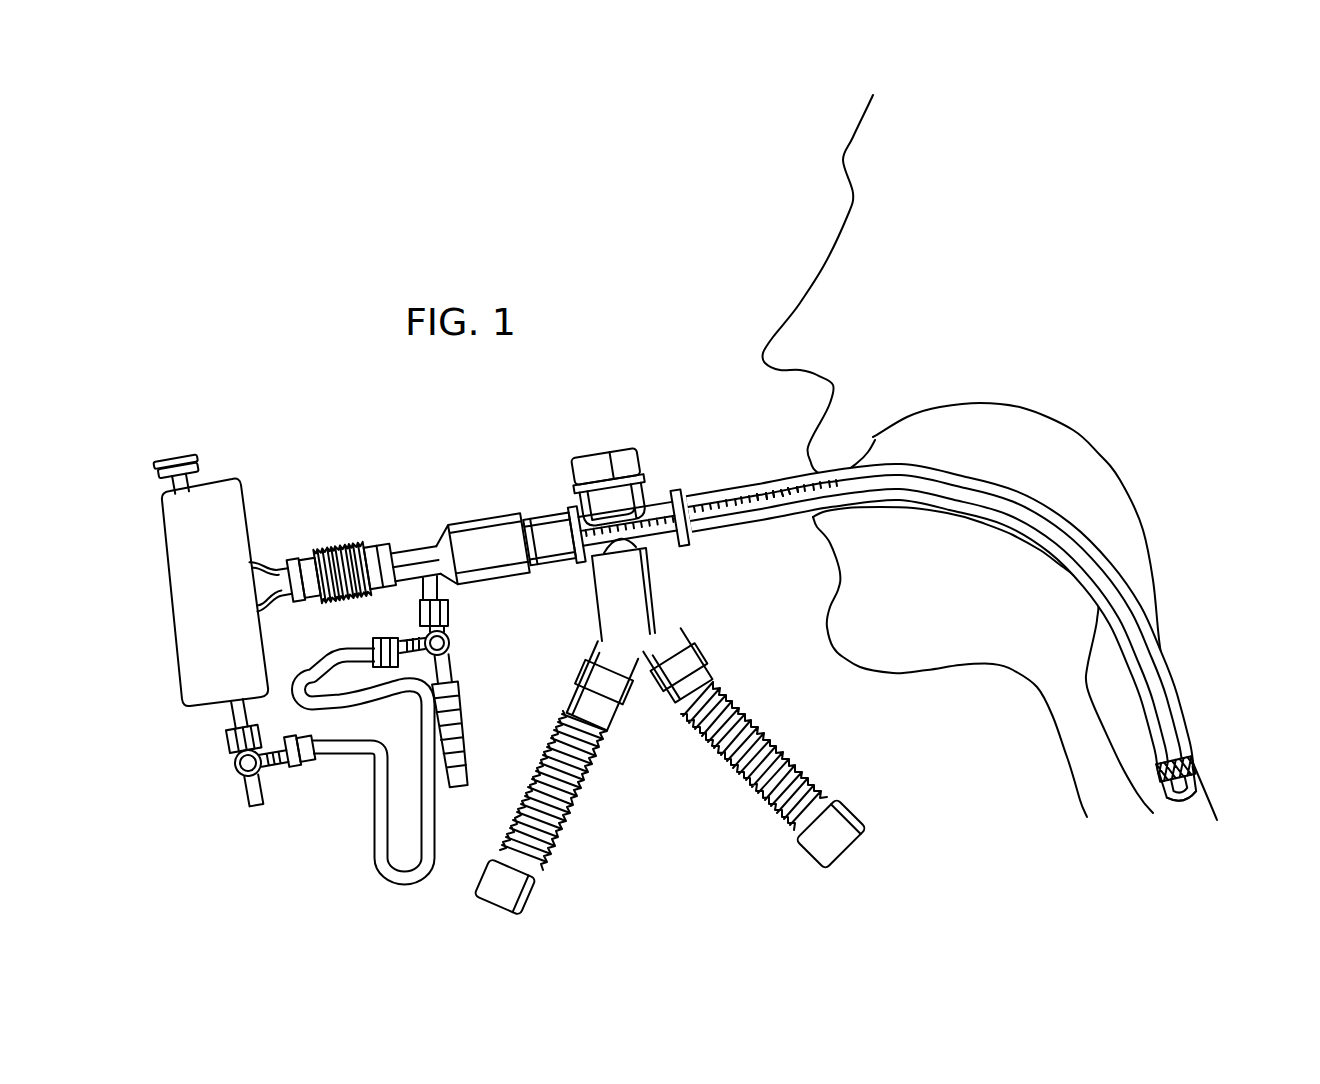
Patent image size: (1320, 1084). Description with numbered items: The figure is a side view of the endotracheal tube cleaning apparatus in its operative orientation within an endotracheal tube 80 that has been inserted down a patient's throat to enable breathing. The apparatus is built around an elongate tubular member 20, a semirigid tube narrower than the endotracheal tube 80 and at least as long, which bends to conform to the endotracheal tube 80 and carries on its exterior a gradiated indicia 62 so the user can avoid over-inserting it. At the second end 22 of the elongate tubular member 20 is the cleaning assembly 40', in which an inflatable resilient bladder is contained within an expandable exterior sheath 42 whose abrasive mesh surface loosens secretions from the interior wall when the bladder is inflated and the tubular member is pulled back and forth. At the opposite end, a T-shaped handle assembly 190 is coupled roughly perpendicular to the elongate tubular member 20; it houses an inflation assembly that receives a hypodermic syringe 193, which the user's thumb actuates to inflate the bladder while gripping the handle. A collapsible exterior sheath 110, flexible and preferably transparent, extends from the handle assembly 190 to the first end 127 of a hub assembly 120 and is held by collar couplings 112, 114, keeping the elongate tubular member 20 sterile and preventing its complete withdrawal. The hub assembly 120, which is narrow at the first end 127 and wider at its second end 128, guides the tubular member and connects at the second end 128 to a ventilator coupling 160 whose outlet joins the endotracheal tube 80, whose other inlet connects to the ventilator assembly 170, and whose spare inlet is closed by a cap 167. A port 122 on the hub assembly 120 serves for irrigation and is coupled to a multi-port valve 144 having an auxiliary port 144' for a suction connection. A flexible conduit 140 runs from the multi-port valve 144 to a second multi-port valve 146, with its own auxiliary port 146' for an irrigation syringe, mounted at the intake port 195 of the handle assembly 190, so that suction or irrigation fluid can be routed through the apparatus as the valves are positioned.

The elongate tubular member 20 is at (1102, 551).
The second end 22 is at (1192, 785).
The cleaning assembly 40' is at (1137, 822).
The expandable exterior sheath 42 is at (1194, 762).
The gradiated indicia 62 is at (763, 510).
The endotracheal tube 80 is at (745, 486).
The collapsible exterior sheath 110 is at (334, 607).
The collar coupling 112 is at (300, 556).
The collar coupling 114 is at (378, 550).
The hub assembly 120 is at (470, 522).
The port 122 is at (440, 592).
The first end 127 is at (402, 552).
The second end 128 is at (535, 520).
The conduit 140 is at (377, 838).
The multi-port valve 144 is at (466, 647).
The auxiliary port 144' is at (475, 721).
The second multi-port valve 146 is at (238, 775).
The auxiliary port 146' is at (222, 822).
The ventilator coupling 160 is at (663, 484).
The cap 167 is at (618, 452).
The ventilator assembly 170 is at (660, 578).
The handle assembly 190 is at (157, 602).
The hypodermic syringe 193 is at (197, 457).
The intake port 195 is at (230, 714).